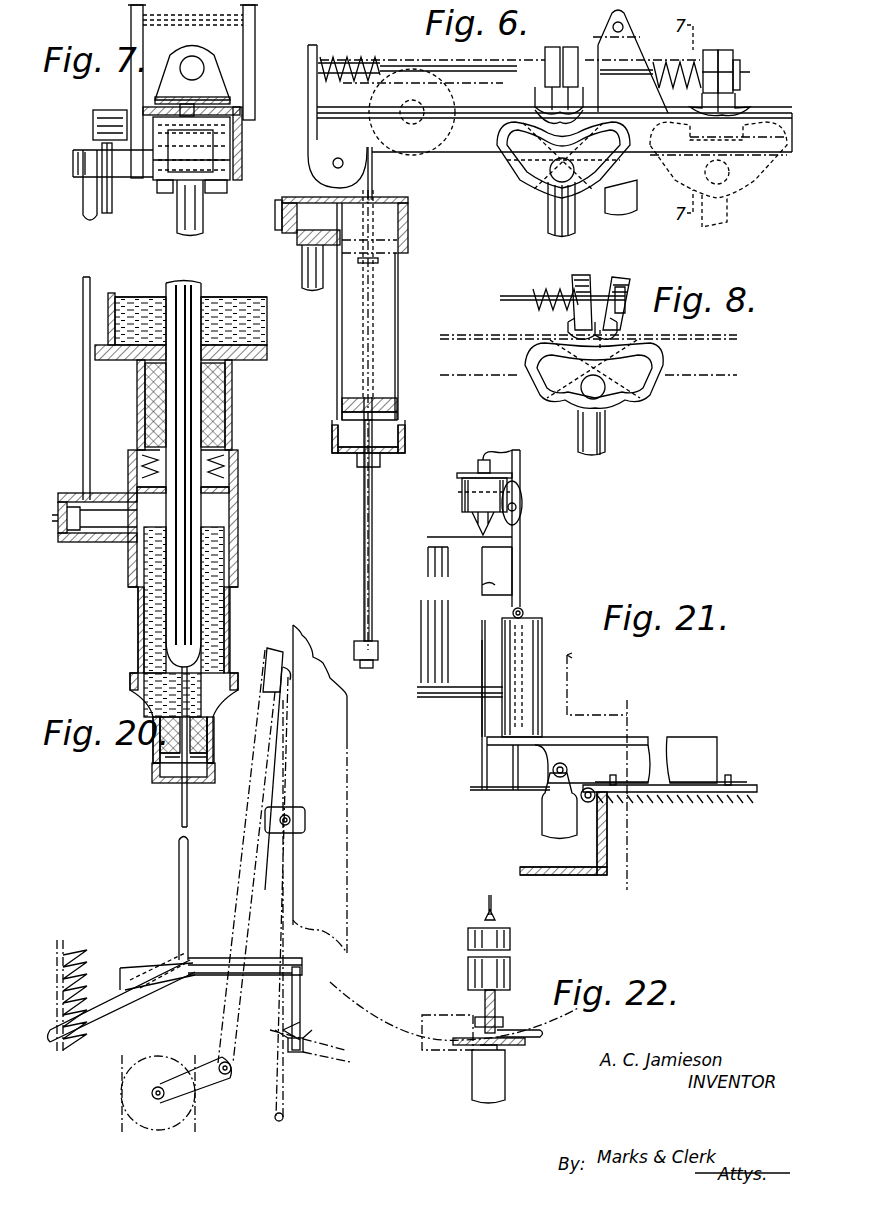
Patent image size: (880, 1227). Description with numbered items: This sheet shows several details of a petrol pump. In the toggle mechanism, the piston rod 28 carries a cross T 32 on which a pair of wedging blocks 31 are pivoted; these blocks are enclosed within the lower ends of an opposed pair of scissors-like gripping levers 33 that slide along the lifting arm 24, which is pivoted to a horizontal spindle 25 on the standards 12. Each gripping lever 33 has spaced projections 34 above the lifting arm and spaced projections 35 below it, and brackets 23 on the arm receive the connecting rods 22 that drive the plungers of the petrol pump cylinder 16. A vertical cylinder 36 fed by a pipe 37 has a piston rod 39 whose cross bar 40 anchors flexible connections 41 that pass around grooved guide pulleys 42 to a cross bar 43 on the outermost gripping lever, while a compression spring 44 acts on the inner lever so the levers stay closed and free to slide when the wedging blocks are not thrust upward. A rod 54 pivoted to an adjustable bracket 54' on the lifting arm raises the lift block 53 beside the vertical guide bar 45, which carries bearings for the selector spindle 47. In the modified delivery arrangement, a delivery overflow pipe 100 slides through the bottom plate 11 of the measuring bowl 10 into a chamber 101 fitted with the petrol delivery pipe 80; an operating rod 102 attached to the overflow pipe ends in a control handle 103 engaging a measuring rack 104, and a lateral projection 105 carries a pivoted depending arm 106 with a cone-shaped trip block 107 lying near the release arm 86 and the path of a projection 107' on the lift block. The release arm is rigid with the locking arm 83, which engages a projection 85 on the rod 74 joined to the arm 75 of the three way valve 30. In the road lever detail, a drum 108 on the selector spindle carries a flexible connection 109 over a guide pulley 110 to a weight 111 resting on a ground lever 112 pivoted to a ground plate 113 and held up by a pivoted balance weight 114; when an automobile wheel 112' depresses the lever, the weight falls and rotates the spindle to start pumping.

In FIG. 20, the petrol measuring bowl 10 is at (115, 297).
In FIG. 20, the bottom plate 11 is at (128, 362).
In FIG. 21, the standards 12 is at (507, 608).
In FIG. 21, the petrol pump cylinder 16 is at (452, 565).
In FIG. 7, the connecting rods 22 is at (82, 208).
In FIG. 6, the connecting rods 22 is at (630, 213).
In FIG. 21, the connecting rods 22 is at (608, 778).
In FIG. 7, the brackets 23 is at (248, 60).
In FIG. 6, the brackets 23 is at (633, 48).
In FIG. 7, the lifting arm 24 is at (148, 108).
In FIG. 6, the lifting arm 24 is at (460, 150).
In FIG. 8, the lifting arm 24 is at (472, 375).
In FIG. 6, the horizontal spindle 25 is at (338, 158).
In FIG. 7, the piston rod 28 is at (203, 222).
In FIG. 6, the piston rod 28 is at (568, 223).
In FIG. 8, the piston rod 28 is at (605, 437).
In FIG. 20, the three way valve 30 is at (122, 1093).
In FIG. 7, the wedging blocks 31 is at (165, 195).
In FIG. 6, the wedging blocks 31 is at (580, 150).
In FIG. 8, the wedging blocks 31 is at (577, 355).
In FIG. 7, the cross T 32 is at (232, 172).
In FIG. 6, the cross T 32 is at (558, 178).
In FIG. 8, the cross T 32 is at (603, 393).
In FIG. 7, the gripping levers 33 is at (175, 60).
In FIG. 6, the gripping levers 33 is at (572, 47).
In FIG. 8, the gripping levers 33 is at (590, 280).
In FIG. 7, the spaced projections 34 is at (212, 98).
In FIG. 6, the spaced projections 34 is at (543, 97).
In FIG. 8, the spaced projections 34 is at (613, 322).
In FIG. 6, the spaced projections 35 is at (522, 130).
In FIG. 8, the spaced projections 35 is at (540, 350).
In FIG. 6, the vertical cylinder 36 is at (393, 281).
In FIG. 6, the pipe 37 is at (313, 290).
In FIG. 6, the piston rod 39 is at (373, 475).
In FIG. 6, the cross bar 40 is at (357, 643).
In FIG. 6, the flexible connections 41 is at (463, 72).
In FIG. 8, the flexible connections 41 is at (522, 303).
In FIG. 6, the grooved guide pulleys 42 is at (410, 112).
In FIG. 6, the cross bar 43 is at (588, 40).
In FIG. 8, the cross bar 43 is at (625, 288).
In FIG. 6, the compression spring 44 is at (350, 58).
In FIG. 8, the compression spring 44 is at (555, 290).
In FIG. 20, the vertical guide bar 45 is at (320, 789).
In FIG. 21, the vertical selector spindle 47 is at (478, 463).
In FIG. 20, the lift block 53 is at (340, 1050).
In FIG. 7, the rod 54 is at (121, 179).
In FIG. 7, the bracket 54' is at (92, 125).
In FIG. 20, the rod 74 is at (243, 858).
In FIG. 20, the arm 75 is at (215, 1062).
In FIG. 20, the petrol delivery pipe 80 is at (100, 535).
In FIG. 20, the locking arm 83 is at (290, 753).
In FIG. 20, the projection 85 is at (292, 678).
In FIG. 20, the release arm 86 is at (275, 1100).
In FIG. 20, the delivery overflow pipe 100 is at (203, 283).
In FIG. 20, the chamber 101 is at (138, 627).
In FIG. 20, the operating rod 102 is at (182, 805).
In FIG. 20, the control handle 103 is at (120, 987).
In FIG. 20, the measuring rack 104 is at (65, 1002).
In FIG. 20, the lateral projection 105 is at (212, 958).
In FIG. 20, the depending arm 106 is at (300, 994).
In FIG. 20, the trip block 107 is at (300, 1054).
In FIG. 20, the projection 107' is at (325, 1024).
In FIG. 21, the drum 108 is at (470, 505).
In FIG. 21, the flexible connection 109 is at (525, 537).
In FIG. 22, the flexible connection 109 is at (495, 910).
In FIG. 21, the guide pulley 110 is at (520, 498).
In FIG. 21, the weight 111 is at (542, 628).
In FIG. 22, the weight 111 is at (475, 977).
In FIG. 21, the ground lever 112 is at (608, 715).
In FIG. 22, the ground lever 112 is at (482, 1020).
In FIG. 22, the wheel 112' is at (455, 1010).
In FIG. 21, the ground plate 113 is at (757, 788).
In FIG. 22, the ground plate 113 is at (522, 1048).
In FIG. 22, the balance weight 114 is at (505, 1082).